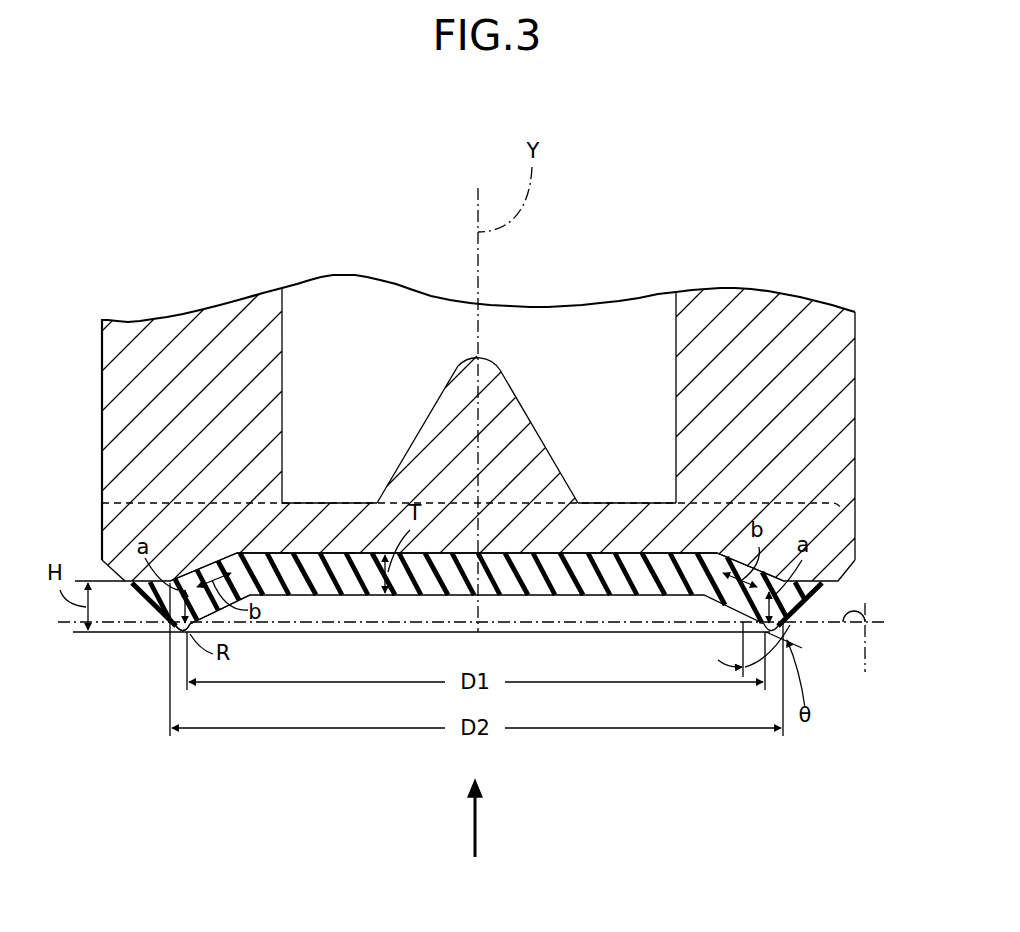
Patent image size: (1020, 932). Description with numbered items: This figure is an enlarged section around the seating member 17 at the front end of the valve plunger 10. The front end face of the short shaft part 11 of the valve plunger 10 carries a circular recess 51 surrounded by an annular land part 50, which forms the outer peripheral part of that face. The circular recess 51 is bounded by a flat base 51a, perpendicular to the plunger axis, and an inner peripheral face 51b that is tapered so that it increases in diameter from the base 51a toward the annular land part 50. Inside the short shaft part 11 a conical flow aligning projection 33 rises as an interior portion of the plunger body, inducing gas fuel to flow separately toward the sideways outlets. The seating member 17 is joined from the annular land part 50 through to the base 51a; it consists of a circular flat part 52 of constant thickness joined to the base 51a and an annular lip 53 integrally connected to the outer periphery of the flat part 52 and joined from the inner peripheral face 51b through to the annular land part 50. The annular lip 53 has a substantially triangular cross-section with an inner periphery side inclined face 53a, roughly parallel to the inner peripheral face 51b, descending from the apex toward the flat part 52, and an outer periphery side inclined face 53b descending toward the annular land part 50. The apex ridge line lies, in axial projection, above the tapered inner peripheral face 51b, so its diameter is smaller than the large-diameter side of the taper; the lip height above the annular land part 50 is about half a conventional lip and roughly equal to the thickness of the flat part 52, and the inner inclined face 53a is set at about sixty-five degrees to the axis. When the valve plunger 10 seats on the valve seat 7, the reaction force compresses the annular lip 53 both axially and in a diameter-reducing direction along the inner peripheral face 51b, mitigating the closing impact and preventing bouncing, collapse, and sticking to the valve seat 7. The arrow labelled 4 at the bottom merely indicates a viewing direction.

The valve plunger 10 is at (100, 388).
The short shaft part 11 is at (832, 398).
The flow aligning projection 33 is at (512, 398).
The annular land part 50 is at (128, 586).
The circular recess 51 is at (386, 452).
The base 51a is at (350, 553).
The inner peripheral face 51b is at (287, 553).
The flat part 52 is at (523, 590).
The annular lip 53 is at (172, 629).
The inner periphery side inclined face 53a is at (222, 612).
The outer periphery side inclined face 53b is at (150, 604).
The seating member 17 is at (806, 606).
The valve seat 7 is at (858, 650).
The viewing direction arrow for FIG. 4 is at (475, 841).